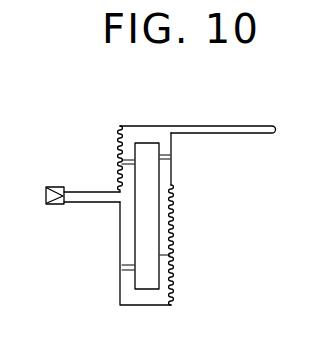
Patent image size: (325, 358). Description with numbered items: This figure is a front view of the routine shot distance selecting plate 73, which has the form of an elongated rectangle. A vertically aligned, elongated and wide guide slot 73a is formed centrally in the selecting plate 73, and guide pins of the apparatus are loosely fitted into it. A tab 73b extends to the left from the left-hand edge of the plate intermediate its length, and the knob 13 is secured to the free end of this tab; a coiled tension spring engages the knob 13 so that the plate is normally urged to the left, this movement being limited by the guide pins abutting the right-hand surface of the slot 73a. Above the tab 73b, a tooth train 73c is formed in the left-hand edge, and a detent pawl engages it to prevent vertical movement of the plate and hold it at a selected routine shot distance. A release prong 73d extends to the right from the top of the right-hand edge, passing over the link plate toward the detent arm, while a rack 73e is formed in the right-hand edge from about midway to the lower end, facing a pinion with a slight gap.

The knob 13 is at (56, 187).
The routine shot distance selecting plate 73 is at (171, 197).
The guide slot 73a is at (137, 274).
The tab 73b is at (85, 198).
The tooth train 73c is at (118, 158).
The release prong 73d is at (251, 127).
The rack 73e is at (173, 230).